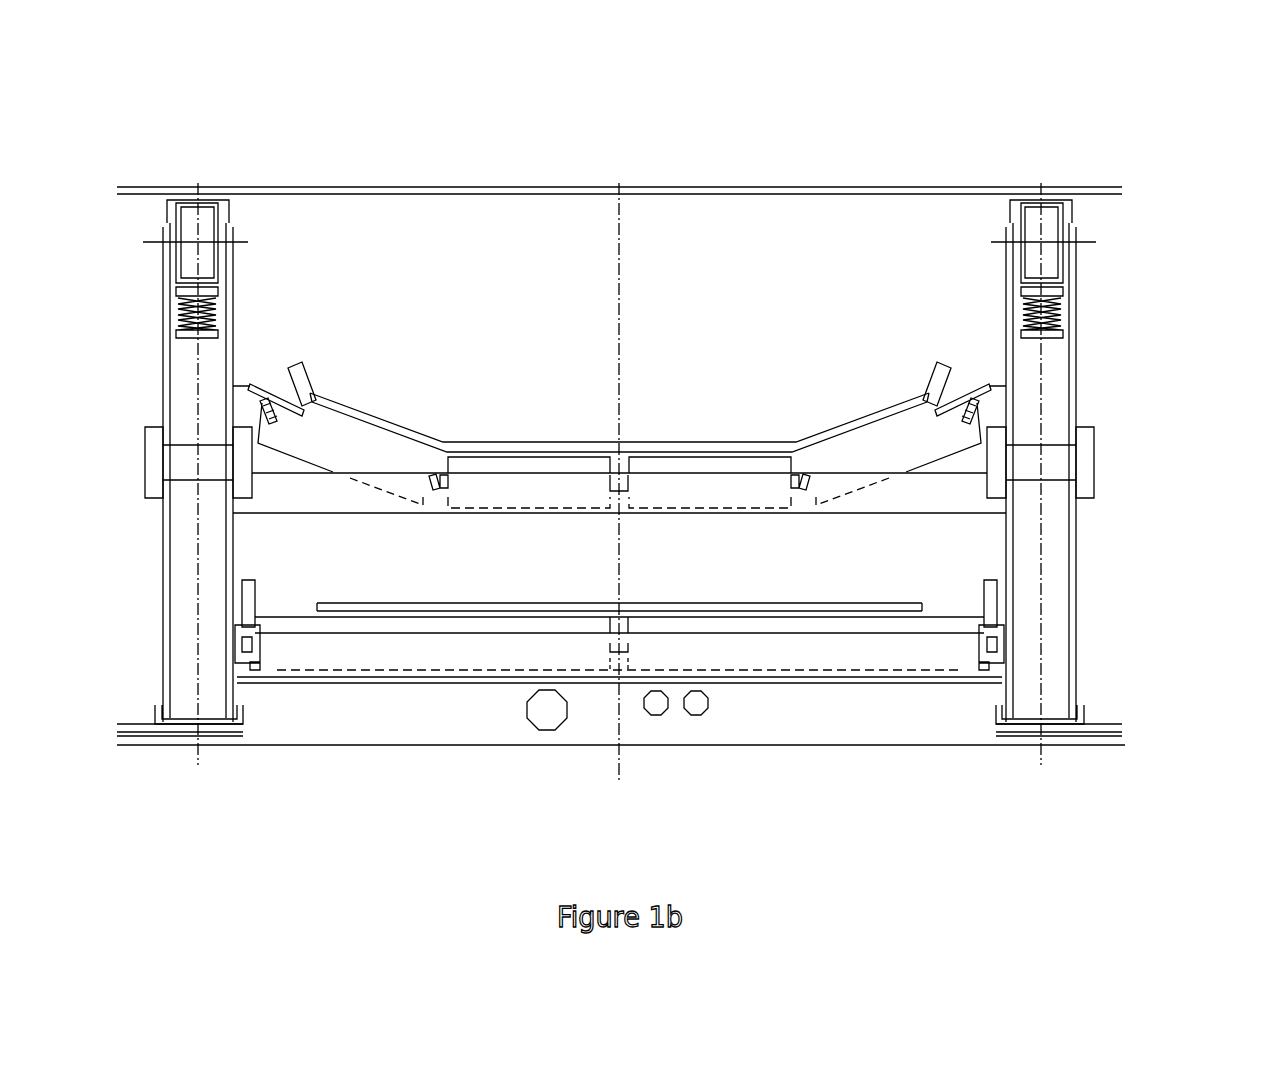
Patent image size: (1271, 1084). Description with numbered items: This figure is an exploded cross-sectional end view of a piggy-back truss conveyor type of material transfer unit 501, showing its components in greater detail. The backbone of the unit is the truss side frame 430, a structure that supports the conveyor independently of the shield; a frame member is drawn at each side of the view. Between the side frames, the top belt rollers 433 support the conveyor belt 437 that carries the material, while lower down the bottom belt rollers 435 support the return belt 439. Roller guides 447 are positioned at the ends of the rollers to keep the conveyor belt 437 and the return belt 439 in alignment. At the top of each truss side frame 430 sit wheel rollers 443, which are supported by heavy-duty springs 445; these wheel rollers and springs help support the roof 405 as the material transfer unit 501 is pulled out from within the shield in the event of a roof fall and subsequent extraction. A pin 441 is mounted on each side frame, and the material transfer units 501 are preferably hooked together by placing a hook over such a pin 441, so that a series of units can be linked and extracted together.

The roof 405 is at (737, 187).
The material transfer unit 501 is at (1148, 167).
The truss side frame 430 is at (163, 637).
The wheel rollers 443 is at (197, 247).
The heavy-duty springs 445 is at (182, 318).
The pin 441 is at (182, 467).
The top belt rollers 433 is at (292, 430).
The roller guides 447 is at (312, 383).
The conveyor belt 437 is at (453, 440).
The bottom belt rollers 435 is at (377, 623).
The return belt 439 is at (836, 607).